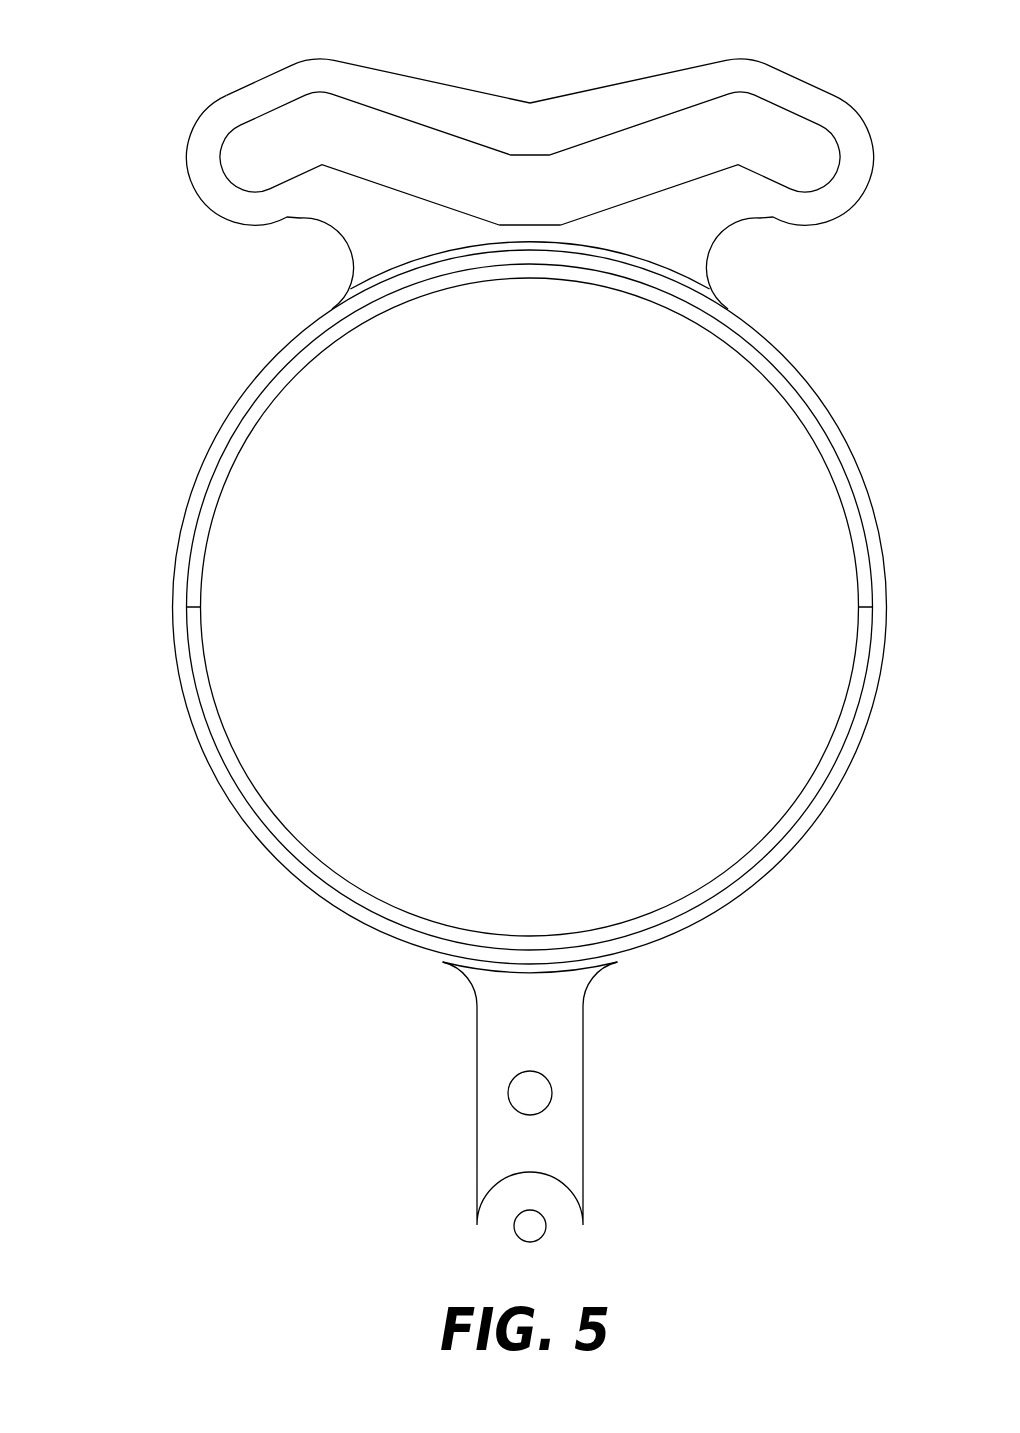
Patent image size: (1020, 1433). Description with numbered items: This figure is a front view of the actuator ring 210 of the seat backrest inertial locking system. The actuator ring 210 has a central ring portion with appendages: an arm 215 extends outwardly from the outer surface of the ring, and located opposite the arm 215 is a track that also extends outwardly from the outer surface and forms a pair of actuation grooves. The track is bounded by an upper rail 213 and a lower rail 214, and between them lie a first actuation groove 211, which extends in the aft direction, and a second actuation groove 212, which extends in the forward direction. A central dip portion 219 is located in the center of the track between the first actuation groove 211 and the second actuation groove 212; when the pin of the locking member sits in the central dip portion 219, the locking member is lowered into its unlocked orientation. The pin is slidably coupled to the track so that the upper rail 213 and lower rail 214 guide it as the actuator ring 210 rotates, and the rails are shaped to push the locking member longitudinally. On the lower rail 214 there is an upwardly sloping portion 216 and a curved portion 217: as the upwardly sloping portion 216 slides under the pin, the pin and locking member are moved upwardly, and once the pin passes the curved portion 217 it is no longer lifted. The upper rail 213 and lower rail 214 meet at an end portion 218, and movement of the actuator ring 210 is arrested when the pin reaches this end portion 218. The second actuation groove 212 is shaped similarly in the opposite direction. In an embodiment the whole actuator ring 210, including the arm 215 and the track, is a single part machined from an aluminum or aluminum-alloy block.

The actuator ring 210 is at (86, 86).
The first actuation groove 211 is at (265, 132).
The second actuation groove 212 is at (803, 138).
The upper rail 213 is at (680, 69).
The lower rail 214 is at (802, 226).
The arm 215 is at (500, 1173).
The upwardly sloping portion 216 is at (410, 197).
The curved portion 217 is at (328, 176).
The end portion 218 is at (222, 165).
The central dip portion 219 is at (532, 227).